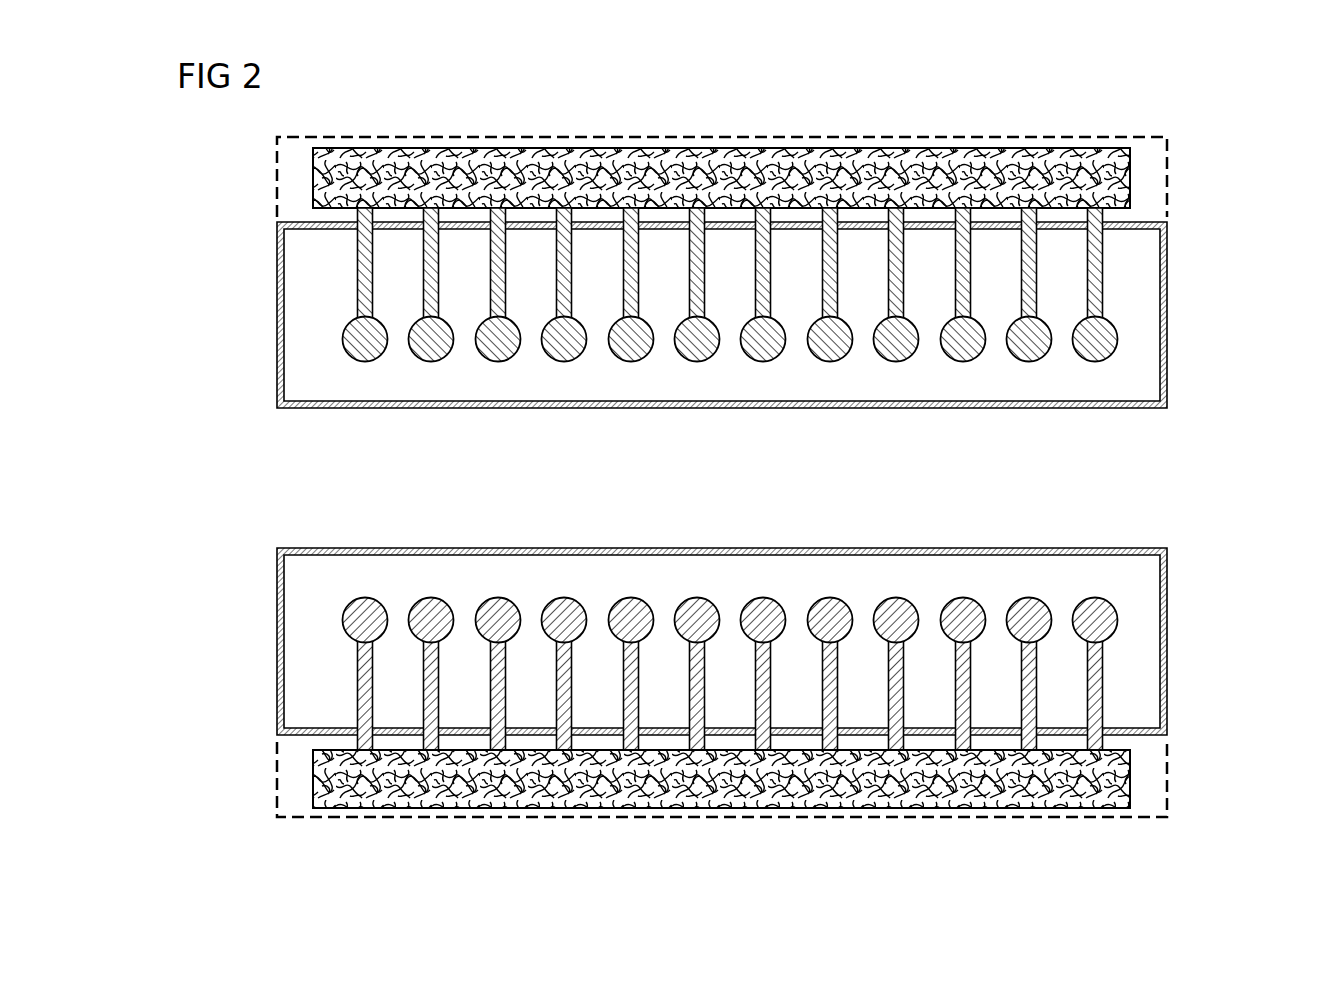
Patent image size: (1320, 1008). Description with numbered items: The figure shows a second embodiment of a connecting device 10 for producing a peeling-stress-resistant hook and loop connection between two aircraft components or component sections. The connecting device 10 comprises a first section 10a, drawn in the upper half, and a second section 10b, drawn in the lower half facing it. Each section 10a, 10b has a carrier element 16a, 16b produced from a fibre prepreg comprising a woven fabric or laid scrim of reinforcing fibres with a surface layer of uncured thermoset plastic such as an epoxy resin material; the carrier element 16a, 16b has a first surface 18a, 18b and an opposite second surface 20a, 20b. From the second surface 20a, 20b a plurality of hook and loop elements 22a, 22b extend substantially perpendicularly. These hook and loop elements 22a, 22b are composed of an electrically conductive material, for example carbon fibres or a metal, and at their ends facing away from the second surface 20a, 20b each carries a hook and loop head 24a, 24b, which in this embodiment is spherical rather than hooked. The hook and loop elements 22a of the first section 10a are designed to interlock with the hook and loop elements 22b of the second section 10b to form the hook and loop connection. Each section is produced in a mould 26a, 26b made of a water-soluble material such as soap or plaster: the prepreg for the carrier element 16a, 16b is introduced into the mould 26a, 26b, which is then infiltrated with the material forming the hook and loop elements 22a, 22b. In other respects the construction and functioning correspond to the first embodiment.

The connecting device 10 is at (1212, 477).
The first section 10a is at (250, 190).
The second section 10b is at (257, 589).
The carrier element 16a is at (765, 148).
The carrier element 16b is at (765, 808).
The first surface 18a is at (1000, 143).
The first surface 18b is at (1002, 808).
The second surface 20a is at (1112, 214).
The second surface 20b is at (1127, 730).
The hook and loop elements 22a is at (373, 245).
The hook and loop elements 22b is at (373, 712).
The hook and loop head 24a is at (368, 361).
The hook and loop head 24b is at (368, 598).
The mould 26a is at (1148, 316).
The mould 26b is at (1148, 640).